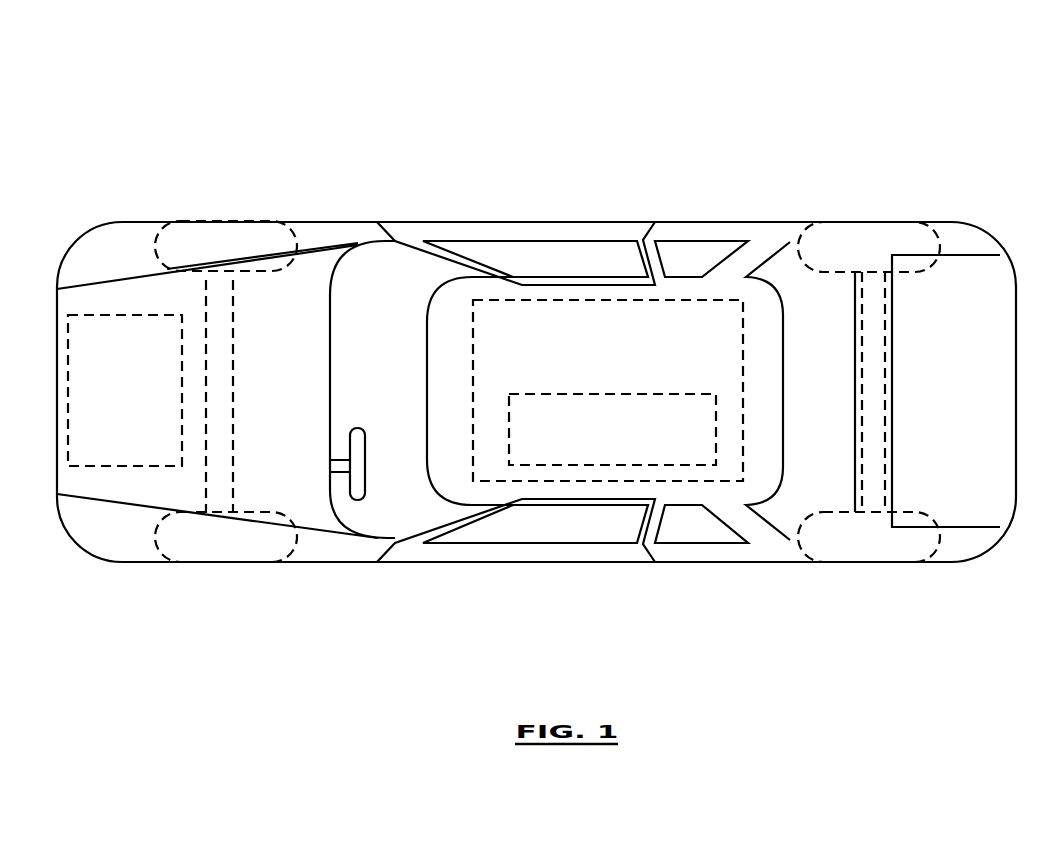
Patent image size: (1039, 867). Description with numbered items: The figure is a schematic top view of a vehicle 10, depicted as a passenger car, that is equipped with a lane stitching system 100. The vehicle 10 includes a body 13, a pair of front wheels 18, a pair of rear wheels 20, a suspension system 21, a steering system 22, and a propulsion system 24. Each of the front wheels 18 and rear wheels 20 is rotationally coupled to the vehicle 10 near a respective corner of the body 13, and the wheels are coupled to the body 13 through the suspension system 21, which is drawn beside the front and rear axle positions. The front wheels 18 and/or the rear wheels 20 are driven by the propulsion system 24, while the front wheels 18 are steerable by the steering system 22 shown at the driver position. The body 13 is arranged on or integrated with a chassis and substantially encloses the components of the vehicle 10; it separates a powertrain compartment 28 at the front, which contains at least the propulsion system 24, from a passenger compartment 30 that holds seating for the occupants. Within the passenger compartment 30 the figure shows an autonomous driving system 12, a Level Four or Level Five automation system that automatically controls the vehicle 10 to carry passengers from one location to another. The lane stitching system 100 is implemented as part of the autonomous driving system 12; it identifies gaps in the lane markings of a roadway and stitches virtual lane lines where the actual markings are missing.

The vehicle 10 is at (550, 108).
The autonomous driving system 12 is at (597, 353).
The body 13 is at (418, 241).
The front wheels 18 is at (226, 221).
The rear wheels 20 is at (855, 222).
The suspension system 21 is at (208, 400).
The steering system 22 is at (352, 428).
The propulsion system 24 is at (113, 399).
The powertrain compartment 28 is at (113, 284).
The passenger compartment 30 is at (677, 280).
The lane stitching system 100 is at (595, 438).